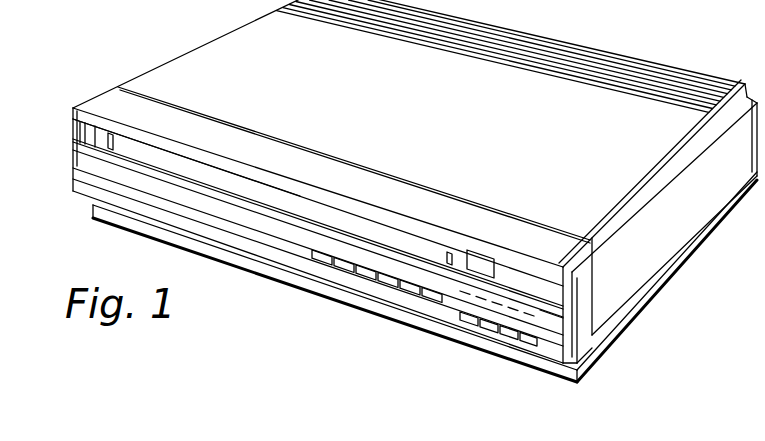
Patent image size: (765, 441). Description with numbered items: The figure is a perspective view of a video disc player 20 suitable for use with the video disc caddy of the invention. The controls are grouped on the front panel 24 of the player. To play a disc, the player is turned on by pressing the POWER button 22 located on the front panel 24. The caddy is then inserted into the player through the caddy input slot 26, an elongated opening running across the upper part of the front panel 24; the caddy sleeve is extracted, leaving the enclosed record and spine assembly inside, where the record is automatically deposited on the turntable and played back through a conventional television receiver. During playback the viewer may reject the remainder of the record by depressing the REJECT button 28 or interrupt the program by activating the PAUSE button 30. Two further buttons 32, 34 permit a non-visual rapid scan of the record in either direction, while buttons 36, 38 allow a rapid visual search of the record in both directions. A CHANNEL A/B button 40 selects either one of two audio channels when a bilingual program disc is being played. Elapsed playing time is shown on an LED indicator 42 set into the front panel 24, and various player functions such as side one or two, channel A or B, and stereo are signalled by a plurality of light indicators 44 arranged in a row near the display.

The video disc player 20 is at (671, 361).
The POWER button 22 is at (536, 340).
The front panel 24 is at (141, 210).
The caddy input slot 26 is at (128, 148).
The REJECT button 28 is at (497, 326).
The PAUSE button 30 is at (468, 318).
The rapid scan button 32 is at (428, 306).
The rapid scan button 34 is at (405, 296).
The visual search button 36 is at (384, 286).
The visual search button 38 is at (352, 273).
The CHANNEL A/B button 40 is at (340, 262).
The LED indicator 42 is at (490, 262).
The light indicators 44 is at (532, 312).